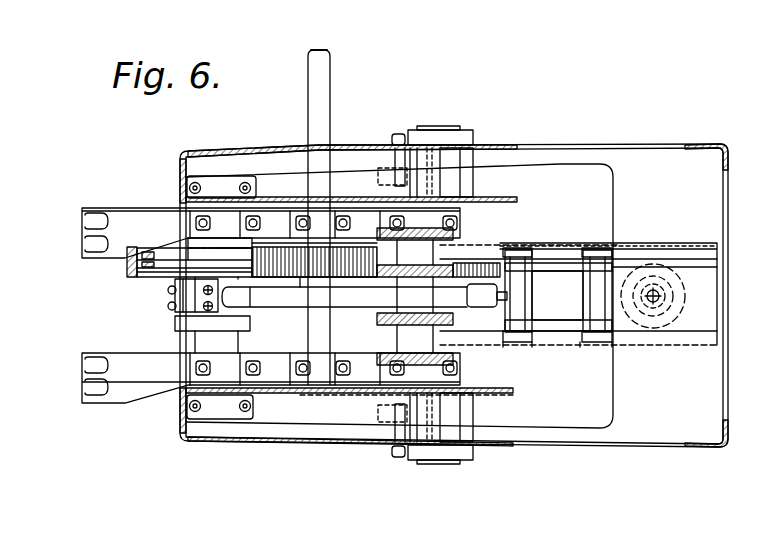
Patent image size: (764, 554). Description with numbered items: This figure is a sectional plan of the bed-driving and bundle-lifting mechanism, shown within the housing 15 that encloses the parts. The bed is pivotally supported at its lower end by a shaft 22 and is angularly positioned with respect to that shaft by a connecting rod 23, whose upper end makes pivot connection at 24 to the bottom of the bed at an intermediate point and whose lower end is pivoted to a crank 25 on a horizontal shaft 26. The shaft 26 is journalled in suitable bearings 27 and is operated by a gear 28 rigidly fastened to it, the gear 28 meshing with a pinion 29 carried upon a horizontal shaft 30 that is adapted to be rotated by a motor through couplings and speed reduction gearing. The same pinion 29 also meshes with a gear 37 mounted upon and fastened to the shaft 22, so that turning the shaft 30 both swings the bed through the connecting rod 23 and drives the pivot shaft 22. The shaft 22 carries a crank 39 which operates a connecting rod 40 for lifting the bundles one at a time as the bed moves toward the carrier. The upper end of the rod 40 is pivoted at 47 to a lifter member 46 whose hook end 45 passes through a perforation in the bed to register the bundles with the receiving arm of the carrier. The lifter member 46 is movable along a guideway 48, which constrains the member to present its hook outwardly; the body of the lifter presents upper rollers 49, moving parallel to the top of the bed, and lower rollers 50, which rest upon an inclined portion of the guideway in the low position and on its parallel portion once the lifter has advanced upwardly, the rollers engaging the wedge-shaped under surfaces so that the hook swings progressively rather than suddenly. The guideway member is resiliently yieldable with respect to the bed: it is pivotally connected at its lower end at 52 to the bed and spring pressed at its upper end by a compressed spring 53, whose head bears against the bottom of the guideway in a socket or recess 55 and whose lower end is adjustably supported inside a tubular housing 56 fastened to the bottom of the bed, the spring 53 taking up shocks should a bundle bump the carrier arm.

The housing 15 is at (237, 443).
The shaft 22 is at (212, 180).
The connecting rod 23 is at (380, 148).
The pivot connection 24 is at (466, 183).
The crank 25 is at (378, 180).
The horizontal shaft 26 is at (378, 313).
The bearings 27 is at (452, 215).
The gear 28 is at (473, 279).
The pinion 29 is at (337, 278).
The horizontal shaft 30 is at (330, 103).
The gear 37 is at (127, 266).
The crank 39 is at (230, 316).
The connecting rod 40 is at (303, 307).
The hook end 45 is at (530, 263).
The lifter member 46 is at (570, 270).
The pivot 47 is at (523, 290).
The guideway 48 is at (685, 267).
The upper rollers 49 is at (573, 345).
The lower rollers 50 is at (528, 345).
The pivotal connection 52 is at (447, 253).
The spring 53 is at (660, 293).
The socket or recess 55 is at (677, 297).
The tubular housing 56 is at (670, 308).